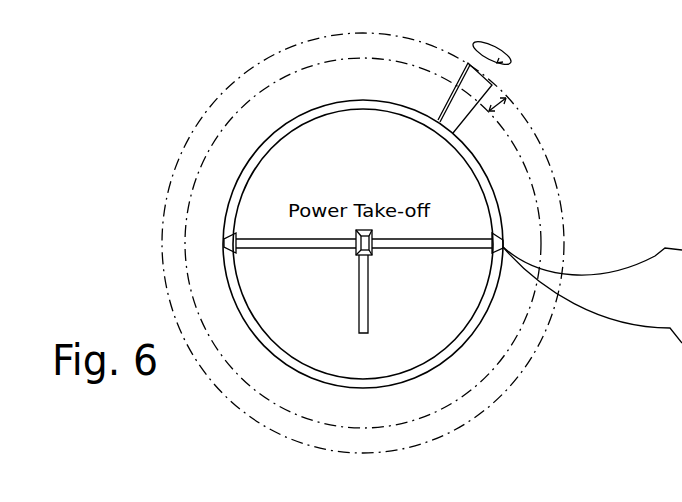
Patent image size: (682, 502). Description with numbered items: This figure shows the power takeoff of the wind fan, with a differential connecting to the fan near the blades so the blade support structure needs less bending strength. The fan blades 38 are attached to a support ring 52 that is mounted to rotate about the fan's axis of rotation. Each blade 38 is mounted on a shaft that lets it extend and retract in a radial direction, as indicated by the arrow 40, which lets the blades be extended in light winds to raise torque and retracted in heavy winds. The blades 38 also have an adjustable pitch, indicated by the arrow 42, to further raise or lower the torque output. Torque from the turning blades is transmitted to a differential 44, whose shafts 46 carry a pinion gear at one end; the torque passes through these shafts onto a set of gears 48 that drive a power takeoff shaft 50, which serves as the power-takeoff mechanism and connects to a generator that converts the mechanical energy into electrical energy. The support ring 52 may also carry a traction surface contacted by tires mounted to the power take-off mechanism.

The blade 38 is at (490, 85).
The arrow 40 is at (503, 110).
The arrow 42 is at (502, 43).
The differential 44 is at (372, 253).
The shaft 46 is at (455, 238).
The set of gears 48 is at (356, 254).
The power takeoff shaft 50 is at (368, 320).
The support ring 52 is at (495, 182).